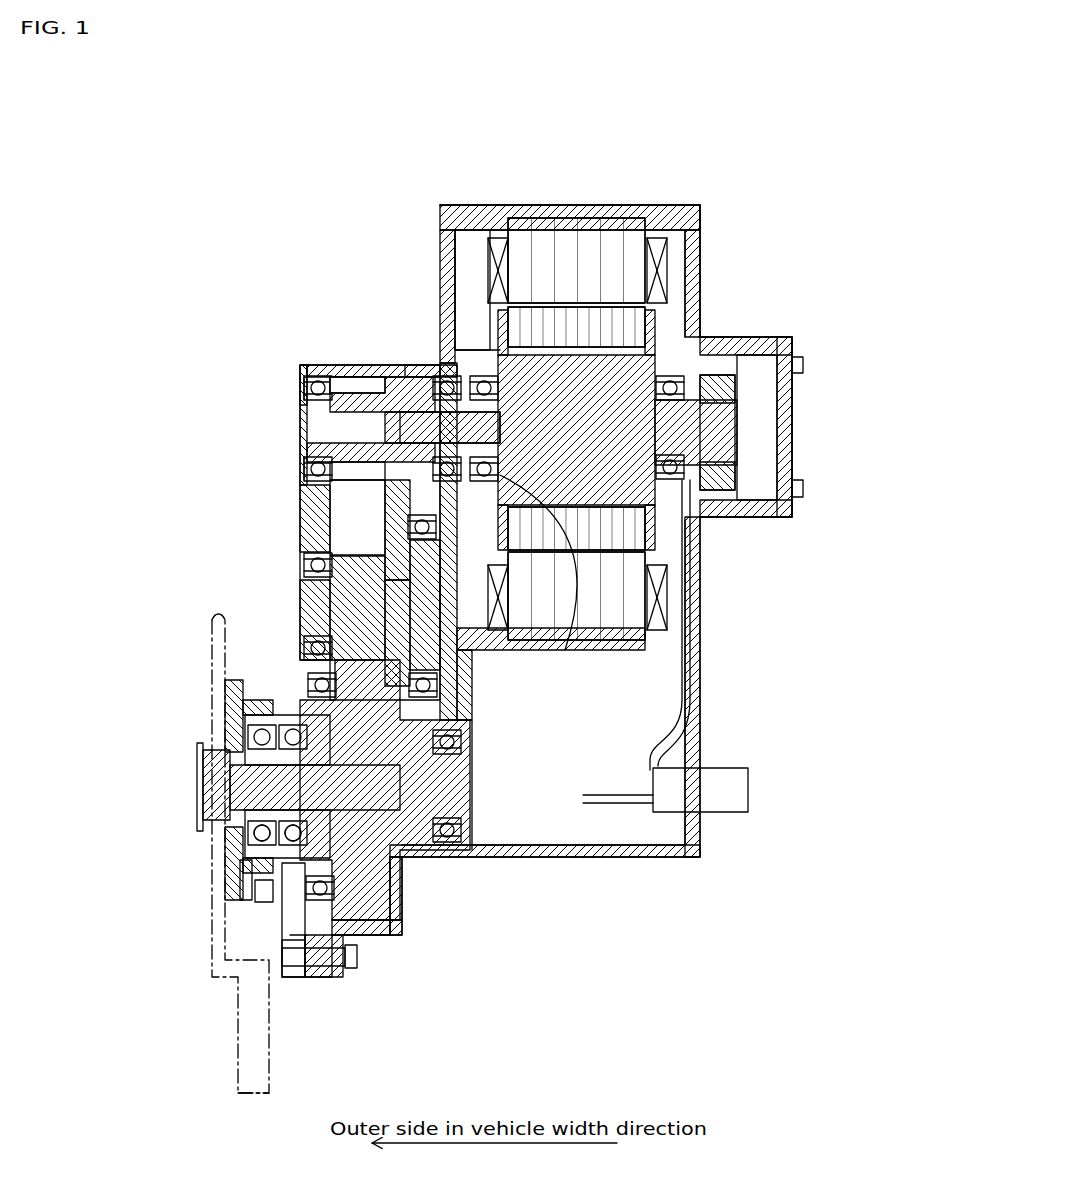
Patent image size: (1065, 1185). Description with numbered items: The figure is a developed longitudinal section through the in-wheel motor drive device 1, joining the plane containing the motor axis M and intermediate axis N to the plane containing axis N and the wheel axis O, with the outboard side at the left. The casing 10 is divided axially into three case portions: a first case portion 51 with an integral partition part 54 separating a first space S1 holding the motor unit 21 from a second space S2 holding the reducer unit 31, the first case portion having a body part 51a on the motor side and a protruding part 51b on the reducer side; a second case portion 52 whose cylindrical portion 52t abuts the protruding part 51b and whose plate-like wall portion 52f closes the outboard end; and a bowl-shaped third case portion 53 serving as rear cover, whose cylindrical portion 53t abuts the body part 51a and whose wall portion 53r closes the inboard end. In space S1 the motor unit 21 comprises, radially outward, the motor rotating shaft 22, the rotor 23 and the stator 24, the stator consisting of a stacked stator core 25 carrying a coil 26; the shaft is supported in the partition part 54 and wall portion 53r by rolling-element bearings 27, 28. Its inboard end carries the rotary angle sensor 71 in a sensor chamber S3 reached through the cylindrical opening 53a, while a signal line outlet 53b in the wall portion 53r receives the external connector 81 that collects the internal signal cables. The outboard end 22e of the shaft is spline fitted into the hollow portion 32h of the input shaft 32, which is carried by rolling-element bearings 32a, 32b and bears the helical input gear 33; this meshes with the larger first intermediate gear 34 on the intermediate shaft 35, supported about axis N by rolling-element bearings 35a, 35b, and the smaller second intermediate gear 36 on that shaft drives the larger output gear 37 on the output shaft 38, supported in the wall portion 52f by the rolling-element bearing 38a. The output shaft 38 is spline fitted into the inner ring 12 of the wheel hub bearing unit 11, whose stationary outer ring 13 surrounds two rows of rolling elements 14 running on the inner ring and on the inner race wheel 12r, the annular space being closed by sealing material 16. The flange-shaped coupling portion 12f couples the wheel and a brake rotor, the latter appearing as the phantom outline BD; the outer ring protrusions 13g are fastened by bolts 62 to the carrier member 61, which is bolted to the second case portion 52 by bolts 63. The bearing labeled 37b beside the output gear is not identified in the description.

The in-wheel motor drive device 1 is at (716, 186).
The casing 10 is at (661, 203).
The wheel hub bearing unit 11 is at (190, 801).
The inner ring 12 is at (245, 735).
The coupling portion 12f is at (240, 890).
The inner race wheel 12r is at (230, 750).
The outer ring 13 is at (240, 702).
The outer ring protrusion 13g is at (248, 888).
The rolling elements 14 is at (235, 843).
The sealing material 16 is at (262, 841).
The motor unit 21 is at (710, 308).
The motor rotating shaft 22 is at (745, 418).
The one end of the motor rotating shaft 22e is at (402, 430).
The rotor 23 is at (622, 540).
The stator 24 is at (662, 271).
The stator core 25 is at (625, 603).
The coil 26 is at (668, 579).
The rolling-element bearing 27 is at (566, 652).
The rolling-element bearing 28 is at (700, 494).
The reducer unit 31 is at (296, 511).
The input shaft 32 is at (330, 410).
The rolling-element bearing 32a is at (305, 364).
The rolling-element bearing 32b is at (445, 375).
The hollow portion 32h is at (385, 424).
The input gear 33 is at (392, 380).
The first intermediate gear 34 is at (413, 740).
The intermediate shaft 35 is at (330, 600).
The rolling-element bearing 35a is at (303, 635).
The rolling-element bearing 35b is at (408, 527).
The second intermediate gear 36 is at (345, 565).
The output gear 37 is at (375, 915).
The bracket bearing 37b is at (313, 882).
The output shaft 38 is at (418, 780).
The rolling-element bearing 38a is at (322, 897).
The first case portion 51 is at (482, 202).
The body part 51a is at (559, 204).
The protruding part 51b is at (410, 362).
The second case portion 52 is at (320, 364).
The wall portion 52f is at (304, 392).
The cylindrical portion 52t is at (345, 365).
The third case portion 53 is at (703, 241).
The opening 53a is at (804, 365).
The signal line outlet 53b is at (700, 815).
The wall portion 53r is at (702, 648).
The cylindrical portion 53t is at (681, 204).
The partition part 54 is at (460, 668).
The carrier member 61 is at (294, 978).
The bolt 62 is at (258, 900).
The bolt 63 is at (355, 962).
The rotary angle sensor 71 is at (740, 463).
The external connector 81 is at (729, 767).
The first space S1 is at (470, 245).
The second space S2 is at (345, 495).
The sensor chamber S3 is at (770, 395).
The axis M is at (180, 428).
The axis N is at (180, 608).
The axis O is at (180, 788).
The brake disc BD is at (238, 1038).